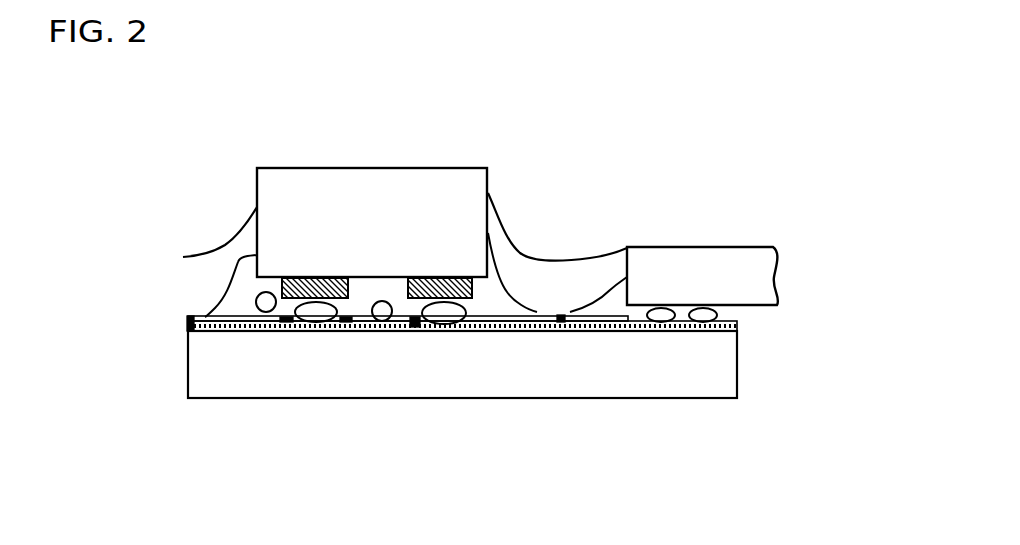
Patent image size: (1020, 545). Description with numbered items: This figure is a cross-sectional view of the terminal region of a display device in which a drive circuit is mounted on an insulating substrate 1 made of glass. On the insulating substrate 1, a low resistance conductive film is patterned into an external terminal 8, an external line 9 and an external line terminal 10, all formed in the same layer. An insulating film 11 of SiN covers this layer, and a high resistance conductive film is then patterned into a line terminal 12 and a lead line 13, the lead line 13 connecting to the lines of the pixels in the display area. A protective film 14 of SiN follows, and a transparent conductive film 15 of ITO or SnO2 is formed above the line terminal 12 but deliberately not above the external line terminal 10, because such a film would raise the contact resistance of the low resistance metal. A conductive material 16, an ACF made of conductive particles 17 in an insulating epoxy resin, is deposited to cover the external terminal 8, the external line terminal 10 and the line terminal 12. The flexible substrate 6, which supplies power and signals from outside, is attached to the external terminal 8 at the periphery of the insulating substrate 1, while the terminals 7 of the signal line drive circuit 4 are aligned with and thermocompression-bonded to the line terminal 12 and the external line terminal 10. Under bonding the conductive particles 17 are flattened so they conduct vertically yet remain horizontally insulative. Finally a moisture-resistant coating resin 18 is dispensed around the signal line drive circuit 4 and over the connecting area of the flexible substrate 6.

The insulating substrate 1 is at (642, 387).
The signal line drive circuit 4 is at (330, 188).
The flexible substrate 6 is at (700, 256).
The terminal 7 is at (337, 277).
The external terminal 8 is at (730, 332).
The external line 9 is at (515, 331).
The external line terminal 10 is at (470, 334).
The insulating film 11 is at (222, 333).
The line terminal 12 is at (347, 334).
The lead line 13 is at (257, 255).
The protective film 14 is at (528, 317).
The transparent conductive film 15 is at (256, 303).
The conductive material 16 is at (483, 288).
The conductive particle 17 is at (478, 312).
The moisture-resistant coating resin 18 is at (228, 246).